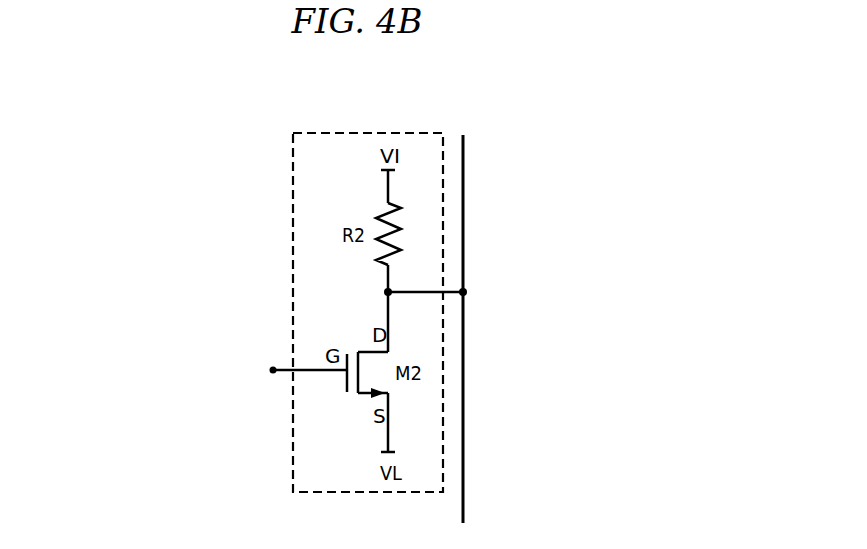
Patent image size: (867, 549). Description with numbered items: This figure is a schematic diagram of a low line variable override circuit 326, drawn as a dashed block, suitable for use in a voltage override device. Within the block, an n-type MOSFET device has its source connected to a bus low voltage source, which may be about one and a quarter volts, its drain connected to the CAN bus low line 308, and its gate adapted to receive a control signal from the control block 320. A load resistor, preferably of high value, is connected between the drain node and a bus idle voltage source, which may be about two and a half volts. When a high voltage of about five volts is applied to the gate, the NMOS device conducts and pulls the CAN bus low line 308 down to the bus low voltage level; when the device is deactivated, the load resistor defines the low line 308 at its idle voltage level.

The low line variable override circuit 326 is at (293, 190).
The CAN bus low line 308 is at (465, 298).
The control block 320 is at (189, 365).